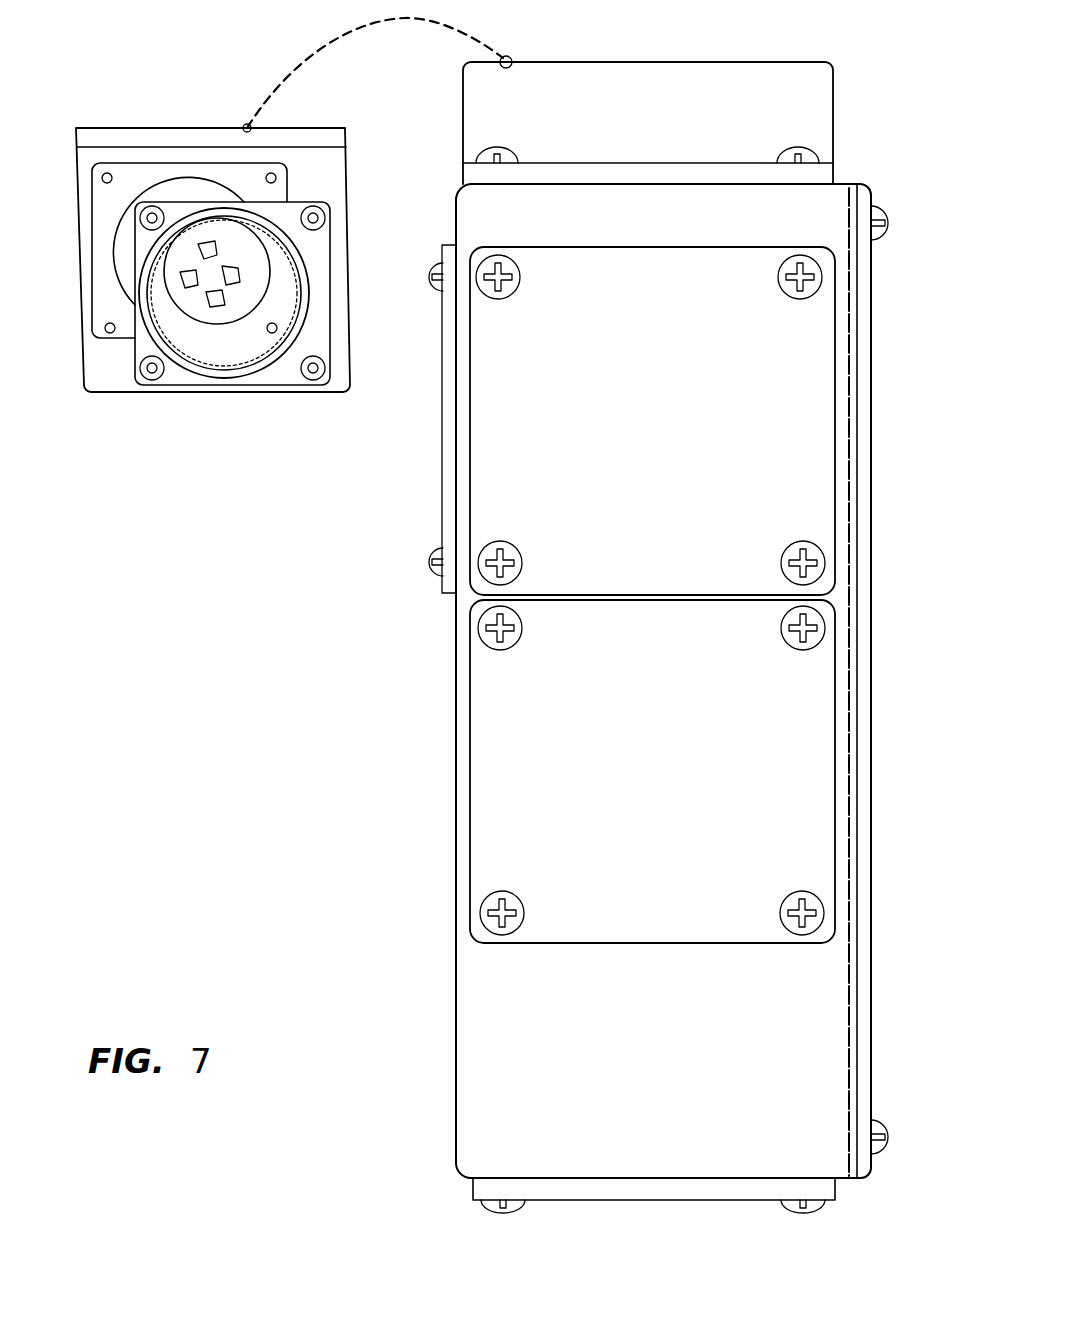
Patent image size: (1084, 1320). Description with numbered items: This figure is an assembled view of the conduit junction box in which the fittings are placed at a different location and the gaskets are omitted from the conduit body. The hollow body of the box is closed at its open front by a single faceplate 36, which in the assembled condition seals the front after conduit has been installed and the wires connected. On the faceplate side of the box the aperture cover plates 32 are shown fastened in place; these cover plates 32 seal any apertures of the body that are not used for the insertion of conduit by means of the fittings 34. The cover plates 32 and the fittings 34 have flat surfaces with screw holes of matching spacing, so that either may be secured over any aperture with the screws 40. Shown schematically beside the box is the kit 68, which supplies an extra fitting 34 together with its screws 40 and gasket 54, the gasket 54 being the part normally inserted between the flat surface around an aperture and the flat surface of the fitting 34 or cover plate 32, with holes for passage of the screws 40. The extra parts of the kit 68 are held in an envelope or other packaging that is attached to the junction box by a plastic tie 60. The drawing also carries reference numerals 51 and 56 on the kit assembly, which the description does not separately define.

The aperture cover plate 32 is at (663, 448).
The fitting 34 is at (660, 60).
The faceplate 36 is at (873, 512).
The screw 40 is at (219, 248).
The receptacle 51 is at (298, 392).
The gasket 54 is at (144, 199).
The mounting hole 56 is at (131, 360).
The plastic tie 60 is at (343, 32).
The kit 68 is at (184, 414).